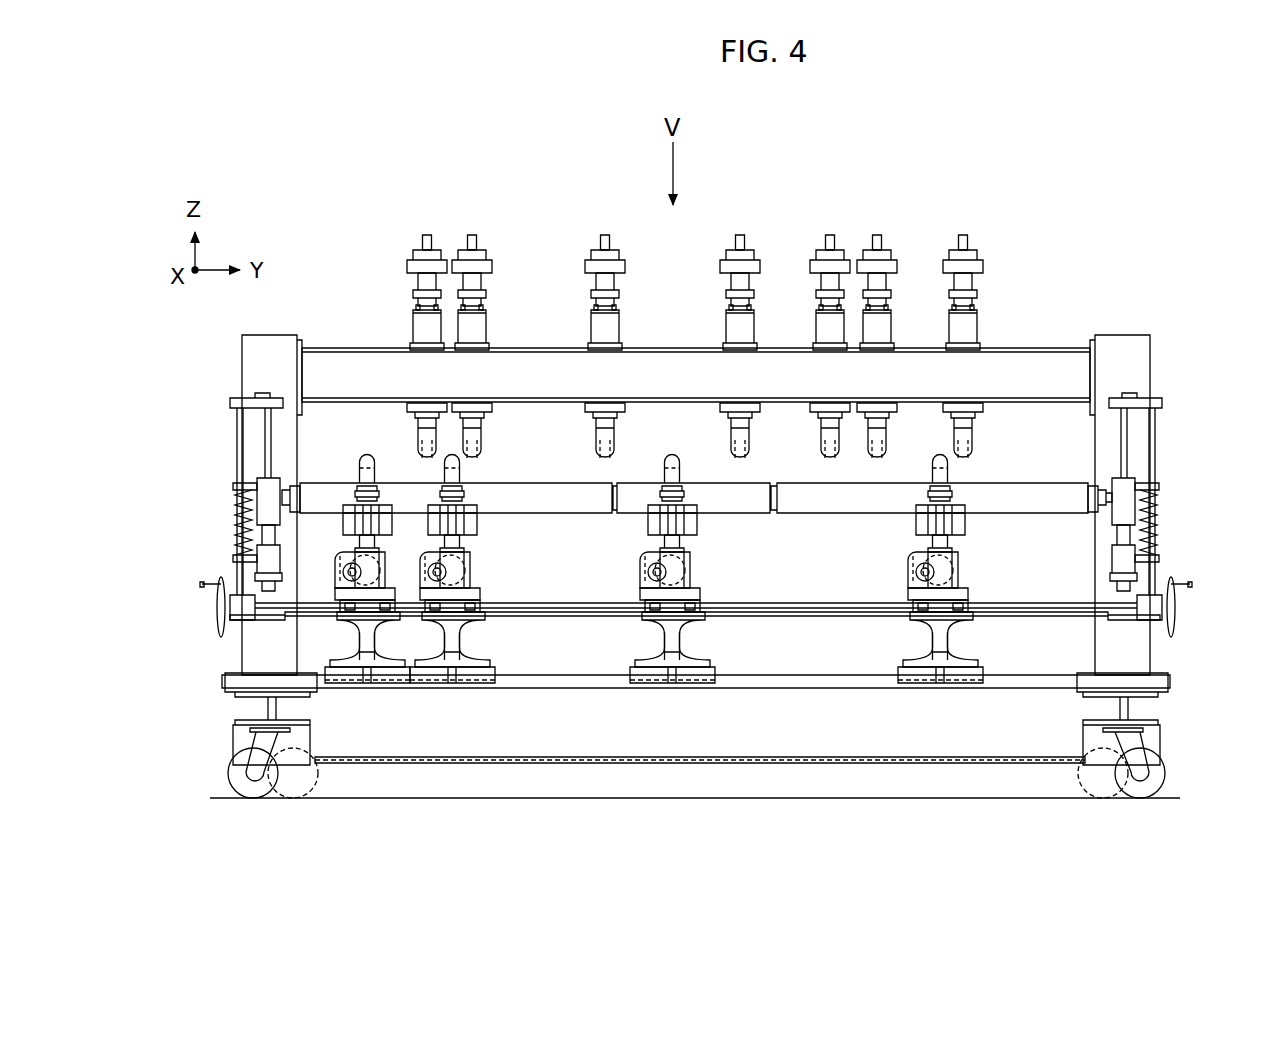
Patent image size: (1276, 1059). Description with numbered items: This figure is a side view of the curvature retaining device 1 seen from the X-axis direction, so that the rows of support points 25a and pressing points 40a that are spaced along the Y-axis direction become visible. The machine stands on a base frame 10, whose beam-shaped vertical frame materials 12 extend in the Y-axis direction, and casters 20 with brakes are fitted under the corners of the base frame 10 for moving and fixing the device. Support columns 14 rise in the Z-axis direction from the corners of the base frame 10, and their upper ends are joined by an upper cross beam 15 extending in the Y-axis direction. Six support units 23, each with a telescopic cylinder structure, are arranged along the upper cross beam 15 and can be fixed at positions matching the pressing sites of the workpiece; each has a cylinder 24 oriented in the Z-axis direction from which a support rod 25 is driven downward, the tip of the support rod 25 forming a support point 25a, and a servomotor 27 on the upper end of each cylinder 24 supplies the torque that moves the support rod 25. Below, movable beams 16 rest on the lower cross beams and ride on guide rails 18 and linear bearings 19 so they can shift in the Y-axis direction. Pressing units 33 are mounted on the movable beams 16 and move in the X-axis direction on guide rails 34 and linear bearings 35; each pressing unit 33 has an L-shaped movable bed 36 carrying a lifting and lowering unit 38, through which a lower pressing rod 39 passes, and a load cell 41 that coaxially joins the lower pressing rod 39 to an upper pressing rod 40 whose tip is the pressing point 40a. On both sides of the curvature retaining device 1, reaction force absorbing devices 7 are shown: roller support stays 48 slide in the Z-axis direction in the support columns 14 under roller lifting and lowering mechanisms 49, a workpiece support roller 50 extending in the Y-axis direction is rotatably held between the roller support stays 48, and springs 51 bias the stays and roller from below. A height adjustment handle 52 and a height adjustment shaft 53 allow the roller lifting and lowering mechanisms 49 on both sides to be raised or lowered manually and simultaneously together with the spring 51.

The curvature retaining device 1 is at (578, 200).
The reaction force absorbing device 7 is at (216, 460).
The base frame 10 is at (588, 770).
The vertical frame material 12 is at (720, 740).
The support column 14 is at (242, 366).
The upper cross beam 15 is at (1025, 348).
The movable beam 16 is at (680, 633).
The guide rail 18 is at (545, 675).
The linear bearing 19 is at (712, 672).
The caster 20 is at (228, 773).
The support unit 23 is at (400, 304).
The cylinder 24 is at (412, 322).
The support rod 25 is at (416, 440).
The support point 25a is at (482, 424).
The servomotor 27 is at (408, 267).
The pressing unit 33 is at (718, 552).
The guide rail 34 is at (637, 607).
The linear bearing 35 is at (654, 606).
The movable bed 36 is at (690, 552).
The lifting and lowering unit 38 is at (692, 572).
The lower pressing rod 39 is at (665, 633).
The upper pressing rod 40 is at (665, 478).
The pressing point 40a is at (364, 458).
The load cell 41 is at (648, 518).
The roller support stay 48 is at (260, 478).
The roller lifting and lowering mechanism 49 is at (230, 513).
The workpiece support roller 50 is at (530, 510).
The spring 51 is at (239, 530).
The height adjustment handle 52 is at (230, 606).
The height adjustment shaft 53 is at (514, 616).